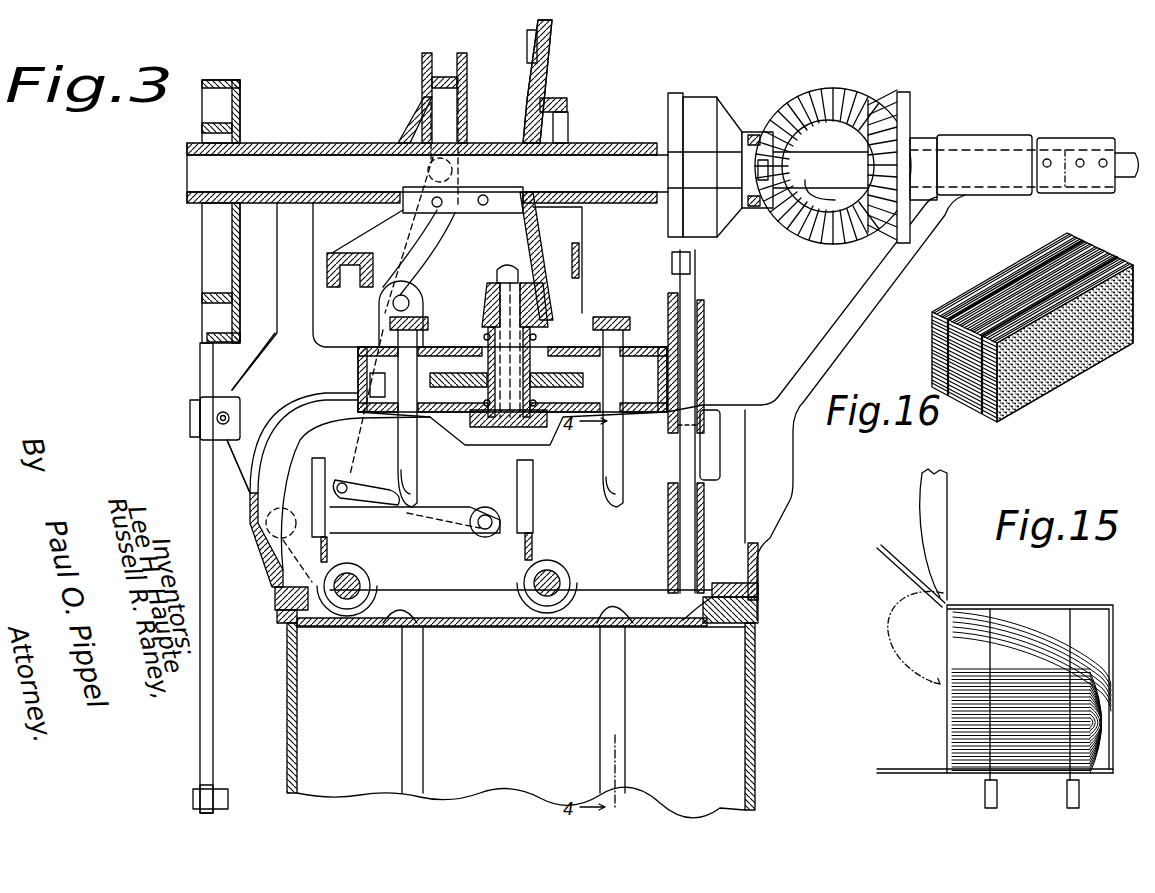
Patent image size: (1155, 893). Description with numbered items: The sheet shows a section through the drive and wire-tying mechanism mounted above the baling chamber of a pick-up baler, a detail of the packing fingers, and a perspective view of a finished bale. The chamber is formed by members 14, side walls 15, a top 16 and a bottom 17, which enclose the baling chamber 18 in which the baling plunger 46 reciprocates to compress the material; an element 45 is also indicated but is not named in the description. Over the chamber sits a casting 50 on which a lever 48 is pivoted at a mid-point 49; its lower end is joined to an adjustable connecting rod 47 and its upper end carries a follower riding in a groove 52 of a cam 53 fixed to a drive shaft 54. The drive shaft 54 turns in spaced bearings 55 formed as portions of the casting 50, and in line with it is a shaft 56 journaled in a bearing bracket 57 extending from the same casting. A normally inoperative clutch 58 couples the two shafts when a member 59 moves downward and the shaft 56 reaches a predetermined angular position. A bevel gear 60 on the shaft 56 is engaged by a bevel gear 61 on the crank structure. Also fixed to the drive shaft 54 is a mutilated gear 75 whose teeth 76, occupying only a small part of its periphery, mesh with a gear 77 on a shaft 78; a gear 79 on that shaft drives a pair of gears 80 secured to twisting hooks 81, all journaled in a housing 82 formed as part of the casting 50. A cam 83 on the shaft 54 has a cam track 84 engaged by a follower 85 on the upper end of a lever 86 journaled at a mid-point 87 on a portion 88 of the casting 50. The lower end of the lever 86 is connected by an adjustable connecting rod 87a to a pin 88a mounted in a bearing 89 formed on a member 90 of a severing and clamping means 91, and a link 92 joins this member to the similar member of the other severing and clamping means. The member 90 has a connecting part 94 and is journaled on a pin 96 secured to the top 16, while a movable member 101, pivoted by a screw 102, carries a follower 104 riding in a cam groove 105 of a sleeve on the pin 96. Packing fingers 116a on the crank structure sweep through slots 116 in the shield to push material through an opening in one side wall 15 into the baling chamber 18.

In FIG. 3, the members 14 is at (277, 647).
In FIG. 3, the side walls 15 is at (287, 714).
In FIG. 15, the side walls 15 is at (1113, 688).
In FIG. 3, the top 16 is at (520, 627).
In FIG. 15, the bottom 17 is at (1016, 775).
In FIG. 3, the baling chamber 18 is at (718, 713).
In FIG. 3, the needle slot 45 is at (413, 707).
In FIG. 3, the baling plunger 46 is at (495, 658).
In FIG. 3, the adjustable connecting rod 47 is at (212, 790).
In FIG. 3, the lever 48 is at (213, 596).
In FIG. 3, the pivot 49 is at (190, 415).
In FIG. 3, the casting 50 is at (270, 367).
In FIG. 3, the groove 52 is at (205, 318).
In FIG. 3, the cam 53 is at (205, 251).
In FIG. 3, the drive shaft 54 is at (200, 176).
In FIG. 3, the bearings 55 is at (297, 145).
In FIG. 3, the shaft 56 is at (1127, 155).
In FIG. 3, the bearing bracket 57 is at (990, 142).
In FIG. 3, the clutch 58 is at (723, 100).
In FIG. 3, the member 59 is at (705, 309).
In FIG. 3, the bevel gear 60 is at (890, 97).
In FIG. 3, the bevel gear 61 is at (837, 247).
In FIG. 3, the mutilated gear 75 is at (553, 60).
In FIG. 3, the teeth 76 is at (527, 44).
In FIG. 3, the gear 77 is at (482, 297).
In FIG. 3, the shaft 78 is at (517, 362).
In FIG. 3, the gear 79 is at (545, 377).
In FIG. 3, the gears 80 is at (433, 370).
In FIG. 3, the twisting hooks 81 is at (423, 470).
In FIG. 15, the twisting hooks 81 is at (985, 797).
In FIG. 3, the housing 82 is at (445, 343).
In FIG. 3, the cam 83 is at (422, 83).
In FIG. 3, the cam track 84 is at (428, 53).
In FIG. 3, the follower 85 is at (428, 168).
In FIG. 3, the lever 86 is at (423, 267).
In FIG. 3, the pivot 87 is at (409, 305).
In FIG. 3, the adjustable connecting rod 87a is at (367, 482).
In FIG. 3, the portion 88 is at (379, 309).
In FIG. 3, the pin 88a is at (485, 515).
In FIG. 3, the bearing 89 is at (480, 532).
In FIG. 3, the member 90 is at (308, 500).
In FIG. 3, the severing and clamping means 91 is at (360, 564).
In FIG. 3, the link 92 is at (420, 533).
In FIG. 3, the connecting part 94 is at (330, 550).
In FIG. 3, the pin 96 is at (367, 583).
In FIG. 3, the movable member 101 is at (311, 487).
In FIG. 3, the screw 102 is at (290, 538).
In FIG. 3, the follower 104 is at (322, 623).
In FIG. 3, the cam groove 105 is at (365, 623).
In FIG. 15, the slots 116 is at (1067, 612).
In FIG. 15, the packing fingers 116a is at (943, 573).